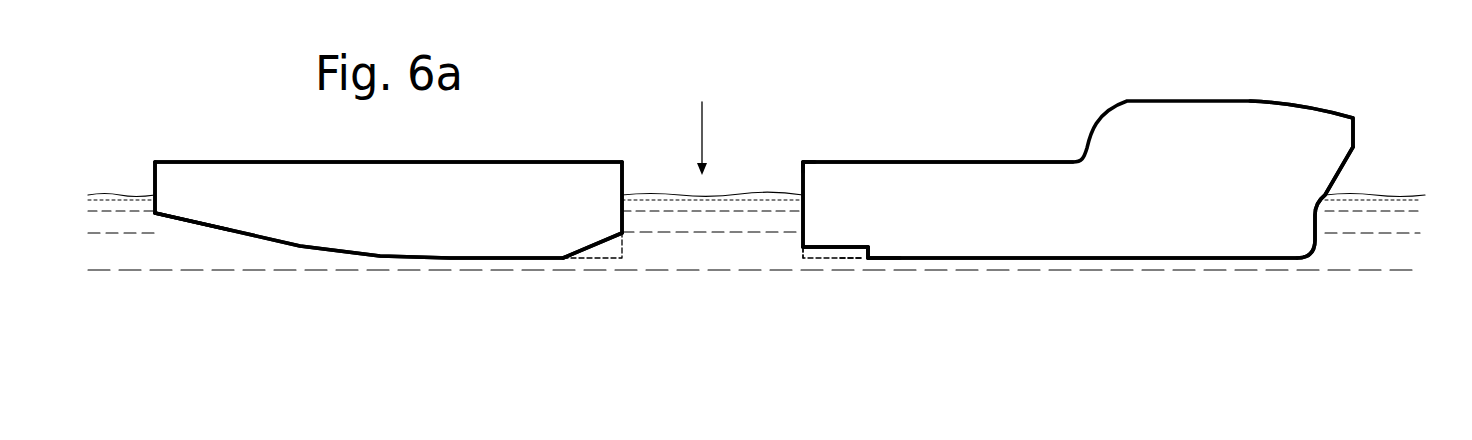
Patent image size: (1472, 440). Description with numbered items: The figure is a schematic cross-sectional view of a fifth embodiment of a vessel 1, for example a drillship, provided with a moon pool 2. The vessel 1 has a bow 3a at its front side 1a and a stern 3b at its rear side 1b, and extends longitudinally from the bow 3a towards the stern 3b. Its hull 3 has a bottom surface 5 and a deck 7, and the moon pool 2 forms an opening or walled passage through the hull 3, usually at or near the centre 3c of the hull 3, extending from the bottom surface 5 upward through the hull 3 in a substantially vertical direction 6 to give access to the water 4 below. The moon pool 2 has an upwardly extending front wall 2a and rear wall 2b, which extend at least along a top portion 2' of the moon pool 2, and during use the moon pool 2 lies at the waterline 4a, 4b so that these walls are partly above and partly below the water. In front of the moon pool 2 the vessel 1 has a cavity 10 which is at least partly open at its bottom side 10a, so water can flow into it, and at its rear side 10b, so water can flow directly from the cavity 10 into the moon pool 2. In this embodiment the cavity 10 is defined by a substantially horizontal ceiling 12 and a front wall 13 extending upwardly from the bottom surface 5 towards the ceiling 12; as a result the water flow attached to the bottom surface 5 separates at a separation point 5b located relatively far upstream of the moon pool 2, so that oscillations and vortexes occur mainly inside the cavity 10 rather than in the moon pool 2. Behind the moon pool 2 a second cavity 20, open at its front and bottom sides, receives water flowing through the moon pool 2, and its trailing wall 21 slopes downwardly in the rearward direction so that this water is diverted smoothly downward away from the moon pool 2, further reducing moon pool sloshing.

The vessel 1 is at (754, 179).
The front side 1a is at (1378, 124).
The rear side 1b is at (136, 161).
The moon pool 2 is at (720, 90).
The top portion of the moon pool 2' is at (675, 290).
The front wall 2a is at (800, 185).
The rear wall 2b is at (622, 178).
The hull 3 is at (248, 192).
The bow 3a is at (1334, 246).
The stern 3b is at (184, 236).
The centre of the hull 3c is at (810, 136).
The water 4 is at (727, 302).
The waterline 4a is at (1377, 192).
The waterline 4b is at (737, 193).
The bottom surface 5 is at (465, 262).
The separation point 5b is at (867, 263).
The vertical direction 6 is at (702, 115).
The deck 7 is at (388, 160).
The cavity 10 is at (822, 253).
The bottom side of the cavity 10a is at (847, 262).
The rear side of the cavity 10b is at (797, 248).
The ceiling 12 is at (840, 243).
The front wall of the first cavity 13 is at (868, 248).
The second cavity 20 is at (618, 252).
The trailing wall 21 is at (600, 243).